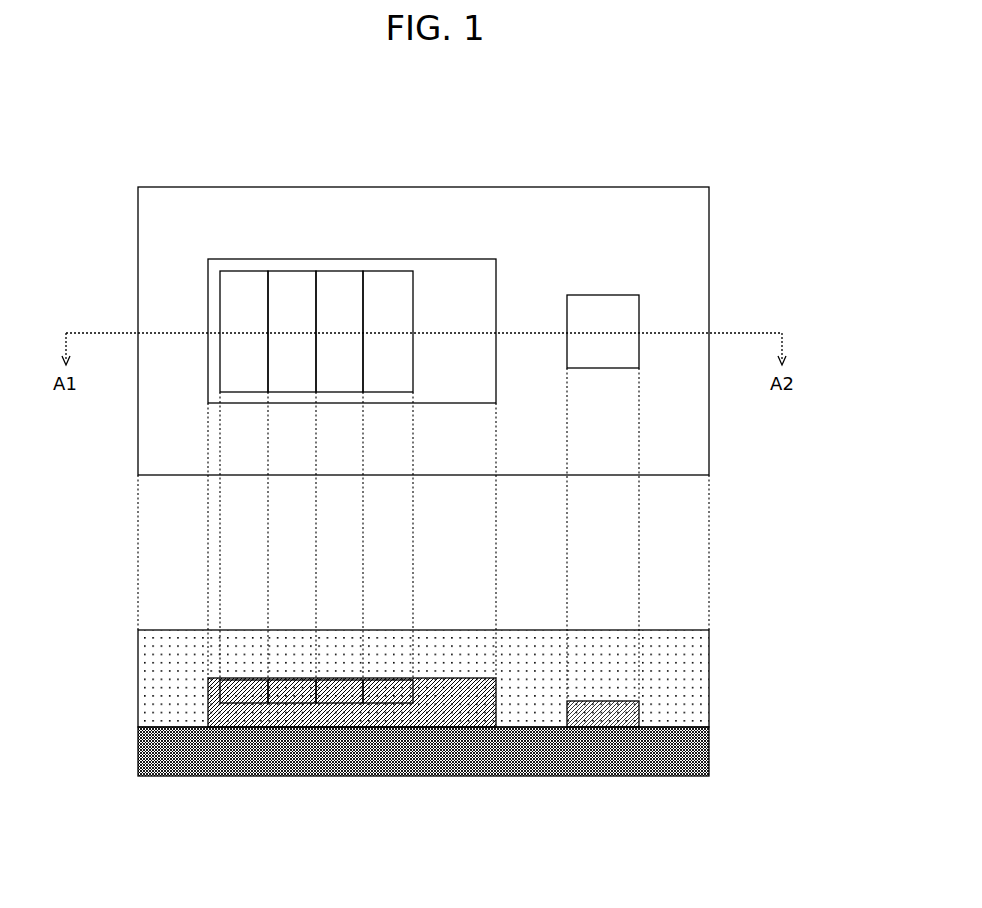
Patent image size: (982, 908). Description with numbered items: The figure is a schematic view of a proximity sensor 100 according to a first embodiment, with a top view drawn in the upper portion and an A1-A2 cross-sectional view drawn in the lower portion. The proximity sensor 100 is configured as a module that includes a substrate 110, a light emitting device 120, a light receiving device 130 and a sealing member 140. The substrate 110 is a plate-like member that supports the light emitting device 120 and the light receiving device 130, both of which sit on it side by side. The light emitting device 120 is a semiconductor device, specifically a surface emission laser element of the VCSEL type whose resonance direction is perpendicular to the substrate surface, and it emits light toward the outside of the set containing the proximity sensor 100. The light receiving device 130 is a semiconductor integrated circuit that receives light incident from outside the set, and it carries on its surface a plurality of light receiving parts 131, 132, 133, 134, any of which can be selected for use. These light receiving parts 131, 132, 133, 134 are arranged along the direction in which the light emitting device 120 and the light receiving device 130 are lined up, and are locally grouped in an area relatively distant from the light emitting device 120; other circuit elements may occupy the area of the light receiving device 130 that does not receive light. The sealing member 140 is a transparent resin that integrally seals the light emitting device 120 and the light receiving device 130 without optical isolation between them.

The proximity sensor 100 is at (780, 113).
The substrate 110 is at (427, 776).
The light emitting device 120 is at (603, 295).
The light receiving device 130 is at (458, 259).
The light receiving part 131 is at (388, 271).
The light receiving part 132 is at (340, 271).
The light receiving part 133 is at (292, 271).
The light receiving part 134 is at (245, 271).
The sealing member 140 is at (528, 631).